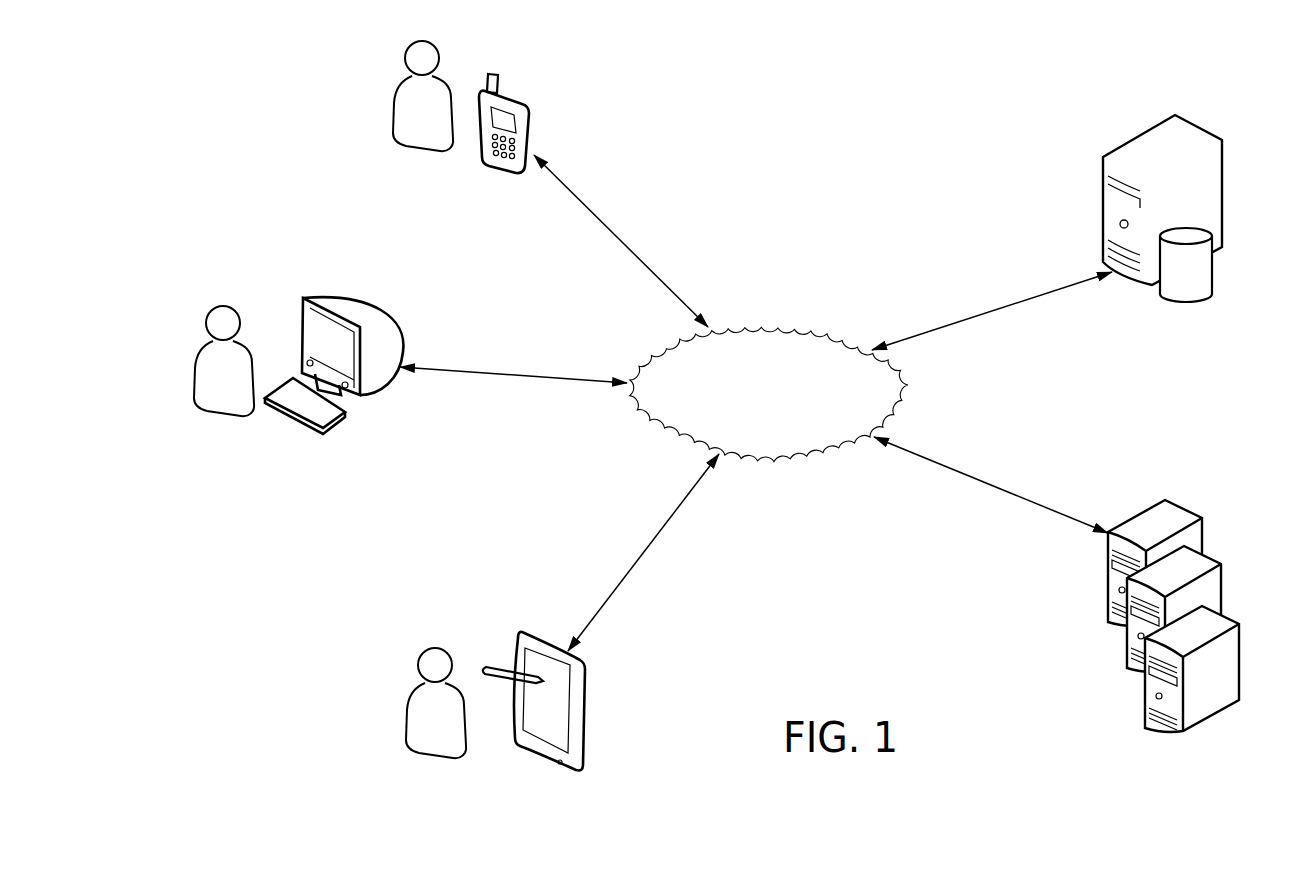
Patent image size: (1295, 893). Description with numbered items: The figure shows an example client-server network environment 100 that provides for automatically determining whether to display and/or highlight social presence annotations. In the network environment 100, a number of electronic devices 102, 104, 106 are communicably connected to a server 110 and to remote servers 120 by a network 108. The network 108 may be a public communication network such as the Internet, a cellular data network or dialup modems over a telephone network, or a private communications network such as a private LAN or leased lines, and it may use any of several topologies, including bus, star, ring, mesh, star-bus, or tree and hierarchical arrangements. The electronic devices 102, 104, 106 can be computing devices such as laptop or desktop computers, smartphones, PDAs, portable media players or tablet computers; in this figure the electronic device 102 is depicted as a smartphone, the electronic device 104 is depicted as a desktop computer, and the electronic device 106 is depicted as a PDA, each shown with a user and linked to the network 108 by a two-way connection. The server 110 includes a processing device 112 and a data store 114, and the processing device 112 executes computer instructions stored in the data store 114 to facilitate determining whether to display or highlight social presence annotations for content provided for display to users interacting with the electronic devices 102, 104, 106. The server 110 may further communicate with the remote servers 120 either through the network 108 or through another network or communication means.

The network environment 100 is at (881, 84).
The electronic device 102 is at (517, 97).
The electronic device 104 is at (368, 306).
The electronic device 106 is at (523, 630).
The network 108 is at (763, 328).
The server 110 is at (1104, 306).
The processing device 112 is at (1197, 123).
The data store 114 is at (1212, 287).
The remote servers 120 is at (1102, 702).